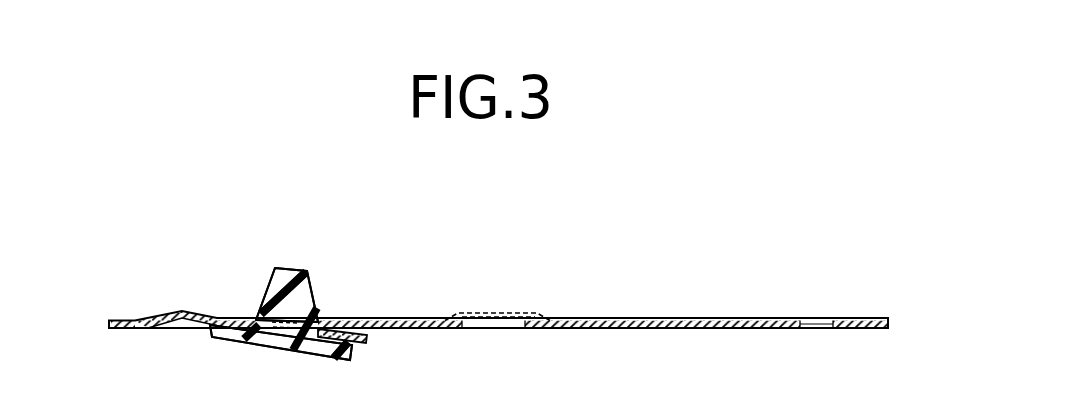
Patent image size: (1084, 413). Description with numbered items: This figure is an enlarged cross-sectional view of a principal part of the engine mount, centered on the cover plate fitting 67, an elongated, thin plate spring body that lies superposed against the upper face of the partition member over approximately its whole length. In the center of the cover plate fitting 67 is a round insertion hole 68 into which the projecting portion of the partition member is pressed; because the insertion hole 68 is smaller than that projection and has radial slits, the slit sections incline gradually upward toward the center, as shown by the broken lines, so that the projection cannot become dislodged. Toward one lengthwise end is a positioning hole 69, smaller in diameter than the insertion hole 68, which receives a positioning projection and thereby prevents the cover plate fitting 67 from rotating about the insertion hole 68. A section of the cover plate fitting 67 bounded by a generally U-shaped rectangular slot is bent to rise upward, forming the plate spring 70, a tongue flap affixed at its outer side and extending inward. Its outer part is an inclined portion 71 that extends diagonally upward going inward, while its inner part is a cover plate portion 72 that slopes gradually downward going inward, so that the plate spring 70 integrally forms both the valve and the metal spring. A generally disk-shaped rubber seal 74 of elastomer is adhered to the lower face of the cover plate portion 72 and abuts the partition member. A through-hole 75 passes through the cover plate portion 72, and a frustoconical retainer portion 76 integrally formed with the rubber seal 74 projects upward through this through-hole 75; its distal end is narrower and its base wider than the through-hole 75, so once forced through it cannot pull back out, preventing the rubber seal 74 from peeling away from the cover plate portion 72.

The cover plate fitting 67 is at (719, 306).
The insertion hole 68 is at (522, 325).
The positioning hole 69 is at (806, 328).
The plate spring 70 is at (236, 304).
The inclined portion 71 is at (162, 313).
The cover plate portion 72 is at (347, 333).
The rubber seal 74 is at (310, 347).
The through-hole 75 is at (268, 326).
The retainer portion 76 is at (294, 306).